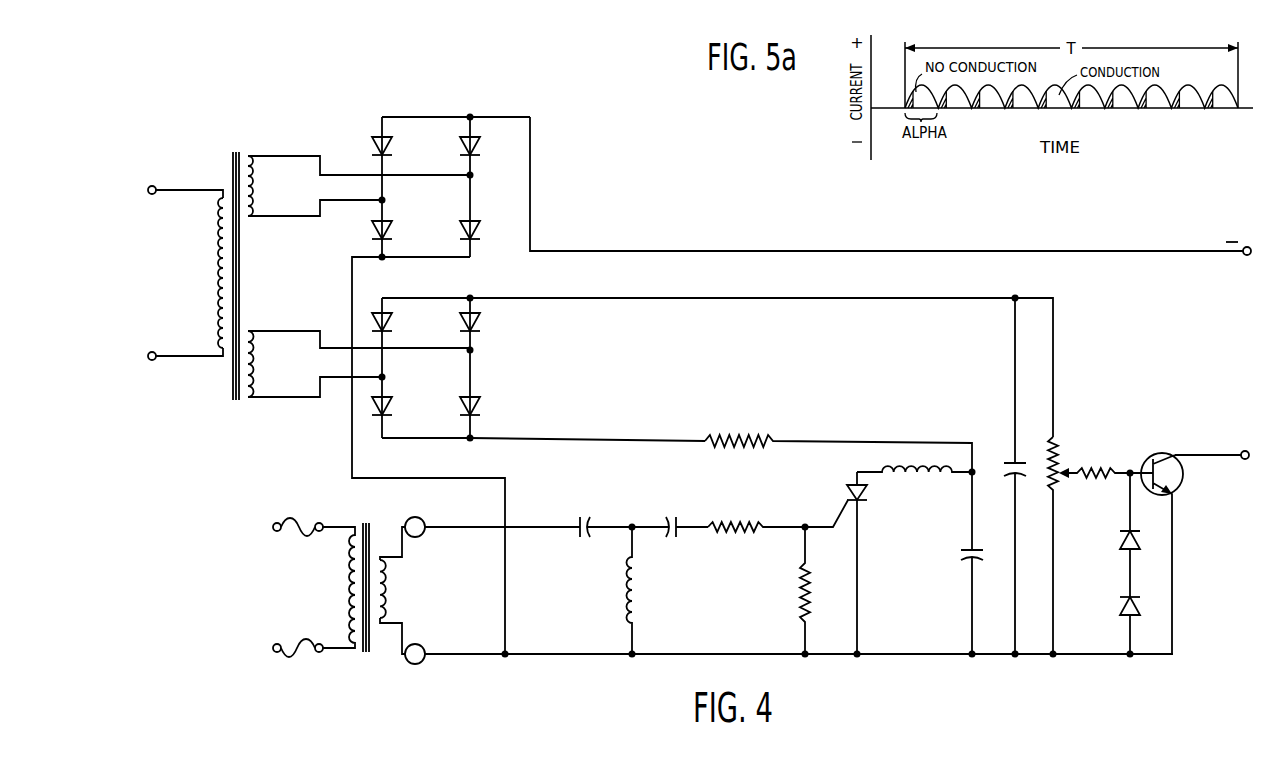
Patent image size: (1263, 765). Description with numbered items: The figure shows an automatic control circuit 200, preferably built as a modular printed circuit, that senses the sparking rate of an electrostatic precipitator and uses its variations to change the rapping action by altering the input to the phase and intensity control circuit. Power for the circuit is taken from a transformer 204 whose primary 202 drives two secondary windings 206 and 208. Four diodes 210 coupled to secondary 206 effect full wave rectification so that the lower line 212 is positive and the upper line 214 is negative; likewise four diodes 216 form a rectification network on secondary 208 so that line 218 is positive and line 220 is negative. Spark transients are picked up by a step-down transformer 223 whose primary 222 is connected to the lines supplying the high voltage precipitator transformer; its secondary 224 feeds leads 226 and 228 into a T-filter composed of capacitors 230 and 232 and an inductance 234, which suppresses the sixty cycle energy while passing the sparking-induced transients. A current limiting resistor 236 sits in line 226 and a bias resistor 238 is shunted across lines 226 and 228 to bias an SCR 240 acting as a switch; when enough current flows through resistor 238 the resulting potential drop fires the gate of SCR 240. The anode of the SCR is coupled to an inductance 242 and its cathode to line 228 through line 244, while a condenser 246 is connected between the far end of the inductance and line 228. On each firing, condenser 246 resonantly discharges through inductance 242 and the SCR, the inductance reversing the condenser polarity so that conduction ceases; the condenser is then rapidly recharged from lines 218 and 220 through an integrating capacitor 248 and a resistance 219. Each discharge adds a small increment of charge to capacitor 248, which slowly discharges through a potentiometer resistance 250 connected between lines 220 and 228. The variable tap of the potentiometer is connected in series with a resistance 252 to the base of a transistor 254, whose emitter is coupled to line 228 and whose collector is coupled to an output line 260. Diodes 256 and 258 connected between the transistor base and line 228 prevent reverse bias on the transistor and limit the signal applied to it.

The automatic control circuit 200 is at (194, 148).
The primary of transformer 202 is at (222, 237).
The transformer 204 is at (238, 150).
The secondary winding 206 is at (257, 183).
The secondary winding 208 is at (257, 362).
The diodes 210 is at (460, 148).
The lower line 212 is at (437, 257).
The upper line 214 is at (730, 250).
The diodes 216 is at (460, 323).
The line 218 is at (498, 438).
The resistance 219 is at (725, 440).
The line 220 is at (539, 298).
The primary of step-down transformer 222 is at (352, 598).
The step-down transformer 223 is at (372, 648).
The secondary of transformer 224 is at (386, 593).
The electrical lead 226 is at (496, 528).
The electrical lead 228 is at (494, 653).
The capacitor 230 is at (590, 524).
The capacitor 232 is at (674, 525).
The inductance 234 is at (642, 594).
The current limiting resistor 236 is at (759, 527).
The bias resistor 238 is at (812, 603).
The SCR 240 is at (846, 492).
The inductance 242 is at (916, 473).
The line 244 is at (857, 612).
The condenser 246 is at (962, 550).
The integrating capacitor 248 is at (1012, 480).
The potentiometer resistance 250 is at (1105, 500).
The resistance 252 is at (1112, 464).
The transistor 254 is at (1178, 485).
The diode 256 is at (1120, 542).
The diode 258 is at (1120, 606).
The line 260 is at (1221, 453).